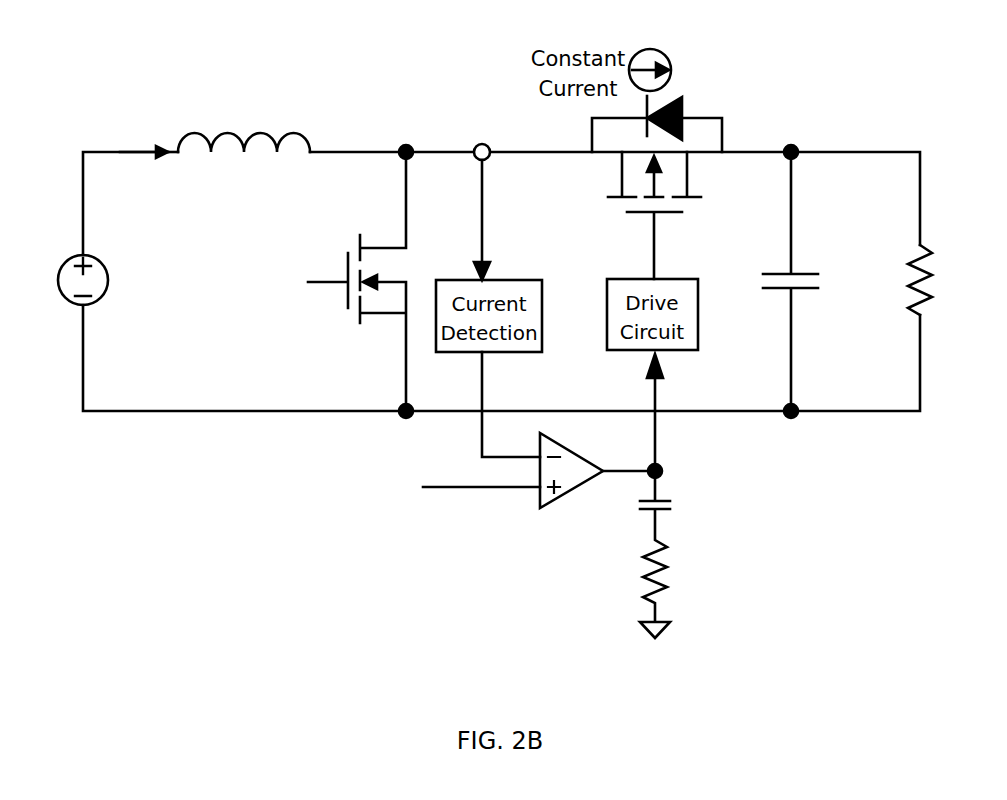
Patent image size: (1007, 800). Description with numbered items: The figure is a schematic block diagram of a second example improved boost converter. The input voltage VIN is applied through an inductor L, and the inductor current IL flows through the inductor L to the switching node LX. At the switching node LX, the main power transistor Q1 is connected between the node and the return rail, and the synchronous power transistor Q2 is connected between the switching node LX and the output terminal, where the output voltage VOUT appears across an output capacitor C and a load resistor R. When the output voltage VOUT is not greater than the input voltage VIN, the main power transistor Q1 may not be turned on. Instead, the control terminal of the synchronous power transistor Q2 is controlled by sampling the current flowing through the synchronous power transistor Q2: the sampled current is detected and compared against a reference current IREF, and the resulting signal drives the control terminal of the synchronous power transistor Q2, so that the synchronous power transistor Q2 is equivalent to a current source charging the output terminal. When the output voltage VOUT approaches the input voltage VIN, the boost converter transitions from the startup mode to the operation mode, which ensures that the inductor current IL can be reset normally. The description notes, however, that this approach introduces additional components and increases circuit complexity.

The inductor L is at (239, 127).
The inductor current IL is at (145, 170).
The input voltage VIN is at (63, 280).
The switching node LX is at (403, 135).
The main power transistor Q1 is at (357, 281).
The synchronous power transistor Q2 is at (654, 215).
The reference current IREF is at (481, 475).
The output voltage VOUT is at (830, 140).
The output capacitor C is at (777, 281).
The load resistor R is at (910, 280).